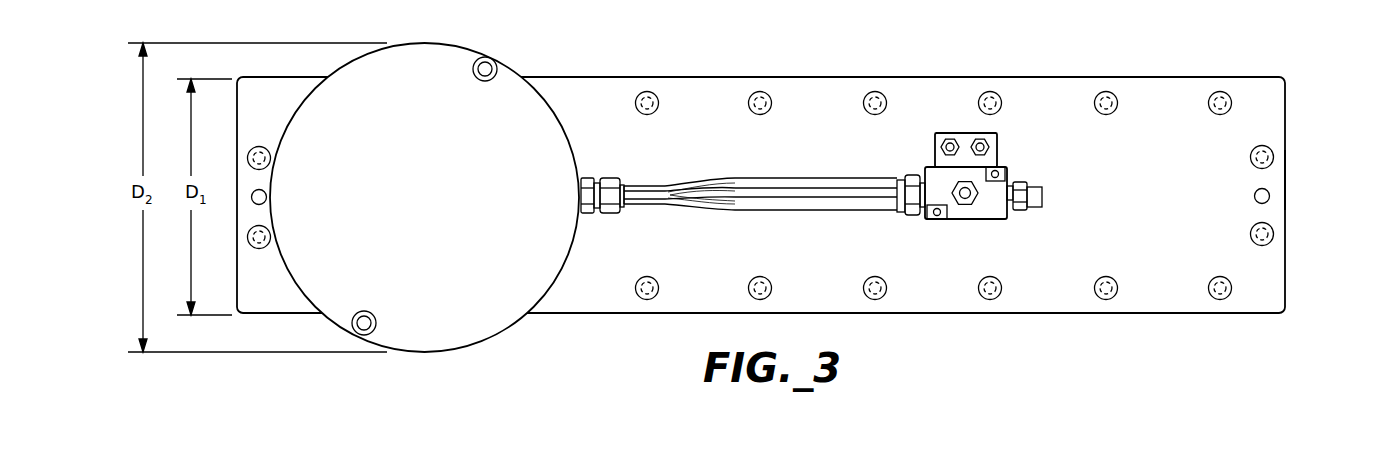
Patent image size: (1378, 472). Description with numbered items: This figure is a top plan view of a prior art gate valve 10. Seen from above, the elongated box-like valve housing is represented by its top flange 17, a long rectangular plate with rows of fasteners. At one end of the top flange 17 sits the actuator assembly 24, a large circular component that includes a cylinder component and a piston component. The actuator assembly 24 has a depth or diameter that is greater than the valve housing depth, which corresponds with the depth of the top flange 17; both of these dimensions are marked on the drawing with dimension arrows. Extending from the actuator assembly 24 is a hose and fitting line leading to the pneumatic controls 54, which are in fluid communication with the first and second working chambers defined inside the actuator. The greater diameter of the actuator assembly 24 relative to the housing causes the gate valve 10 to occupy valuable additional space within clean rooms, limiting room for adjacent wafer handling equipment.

The gate valve 10 is at (1290, 180).
The top flange 17 is at (1083, 270).
The actuator assembly 24 is at (483, 286).
The pneumatic controls 54 is at (864, 214).